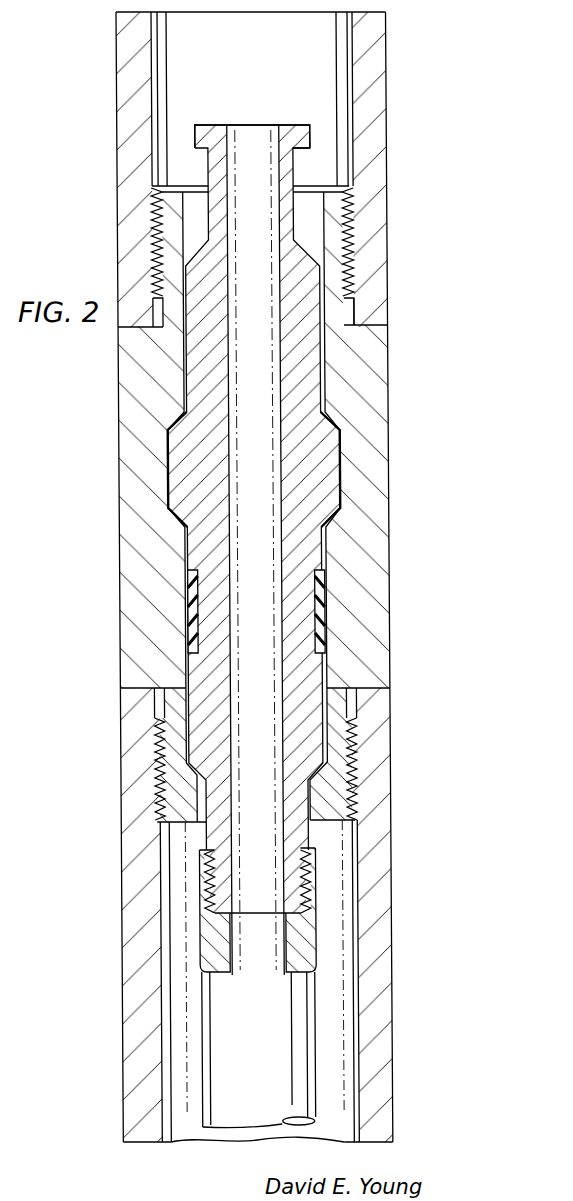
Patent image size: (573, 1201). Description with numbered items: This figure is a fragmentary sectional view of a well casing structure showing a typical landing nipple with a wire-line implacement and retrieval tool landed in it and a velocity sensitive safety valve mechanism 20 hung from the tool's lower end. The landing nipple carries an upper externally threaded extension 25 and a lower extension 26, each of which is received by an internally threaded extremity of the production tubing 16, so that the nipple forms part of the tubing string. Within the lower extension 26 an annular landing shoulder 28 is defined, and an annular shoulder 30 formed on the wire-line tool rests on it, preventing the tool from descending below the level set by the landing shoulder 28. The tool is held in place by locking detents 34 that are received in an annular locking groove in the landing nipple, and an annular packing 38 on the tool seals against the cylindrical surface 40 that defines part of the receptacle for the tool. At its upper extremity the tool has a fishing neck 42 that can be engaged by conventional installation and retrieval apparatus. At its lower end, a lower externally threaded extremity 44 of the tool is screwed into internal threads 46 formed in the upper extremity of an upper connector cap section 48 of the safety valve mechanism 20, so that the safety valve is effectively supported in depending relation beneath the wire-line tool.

The production tubing 16 is at (373, 78).
The safety valve mechanism 20 is at (318, 1028).
The externally threaded extension 25 is at (283, 438).
The lower extension 26 is at (397, 767).
The annular landing shoulder 28 is at (101, 796).
The annular shoulder 30 is at (302, 755).
The locking detents 34 is at (175, 462).
The packing 38 is at (183, 607).
The cylindrical surface 40 is at (185, 690).
The fishing neck 42 is at (206, 151).
The lower externally threaded extremity 44 is at (304, 890).
The internal threads 46 is at (208, 875).
The upper connector cap section 48 is at (206, 955).